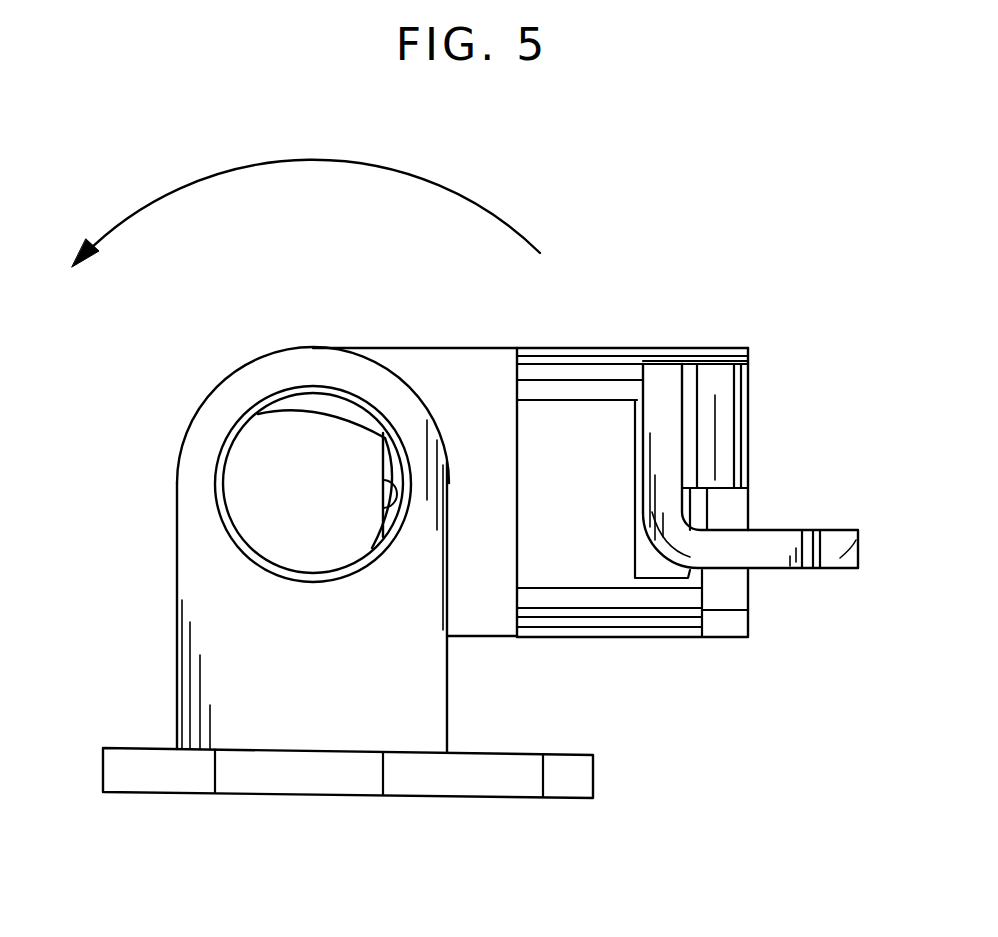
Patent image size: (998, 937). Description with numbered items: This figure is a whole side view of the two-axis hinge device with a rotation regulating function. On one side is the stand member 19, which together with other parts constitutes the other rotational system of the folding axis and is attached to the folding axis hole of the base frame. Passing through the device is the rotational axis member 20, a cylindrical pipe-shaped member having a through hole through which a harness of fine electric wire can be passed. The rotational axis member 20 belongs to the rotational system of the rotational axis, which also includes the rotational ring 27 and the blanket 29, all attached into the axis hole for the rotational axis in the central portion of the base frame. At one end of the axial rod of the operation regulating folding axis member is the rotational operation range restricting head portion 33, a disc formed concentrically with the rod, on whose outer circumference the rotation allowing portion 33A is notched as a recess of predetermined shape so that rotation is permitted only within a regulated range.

The stand member 19 is at (202, 547).
The rotational axis member 20 is at (252, 543).
The rotational ring 27 is at (600, 385).
The blanket 29 is at (856, 541).
The rotational operation range restricting head portion 33 is at (290, 443).
The rotation allowing portion 33A is at (383, 508).